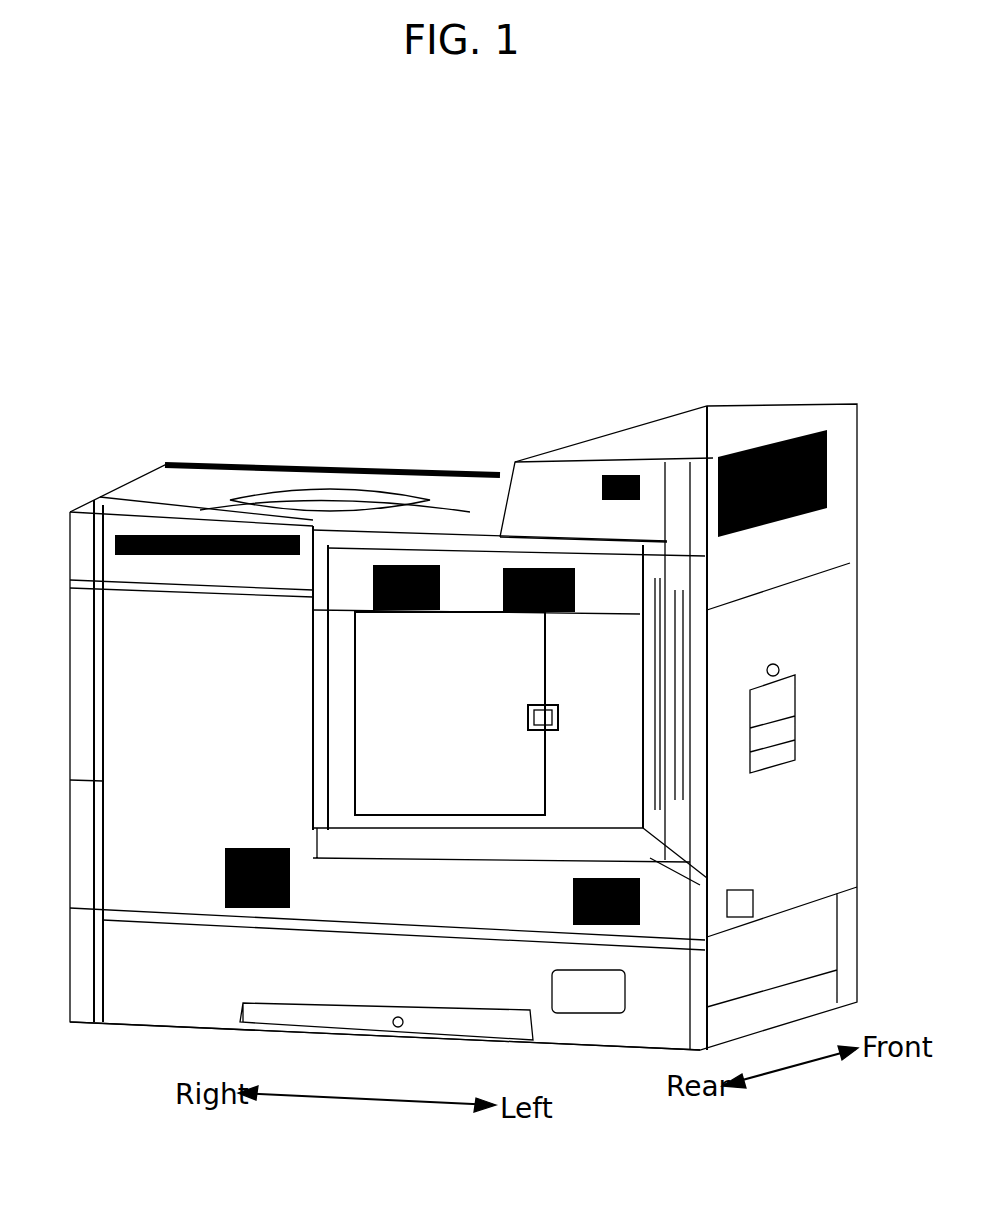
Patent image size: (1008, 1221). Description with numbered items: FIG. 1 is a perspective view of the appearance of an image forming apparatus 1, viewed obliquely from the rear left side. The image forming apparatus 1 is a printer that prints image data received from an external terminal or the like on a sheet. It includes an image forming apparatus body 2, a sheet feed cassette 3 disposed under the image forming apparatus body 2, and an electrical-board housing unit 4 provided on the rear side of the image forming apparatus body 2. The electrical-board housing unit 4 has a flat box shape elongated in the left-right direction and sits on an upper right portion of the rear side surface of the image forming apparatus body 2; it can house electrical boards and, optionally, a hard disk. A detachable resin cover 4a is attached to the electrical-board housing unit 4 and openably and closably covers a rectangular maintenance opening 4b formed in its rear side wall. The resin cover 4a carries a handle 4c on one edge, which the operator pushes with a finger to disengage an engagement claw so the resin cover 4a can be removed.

The image forming apparatus 1 is at (216, 440).
The image forming apparatus body 2 is at (390, 468).
The sheet feed cassette 3 is at (64, 942).
The electrical-board housing unit 4 is at (490, 546).
The resin cover 4a is at (478, 640).
The maintenance opening 4b is at (543, 652).
The handle 4c is at (537, 730).